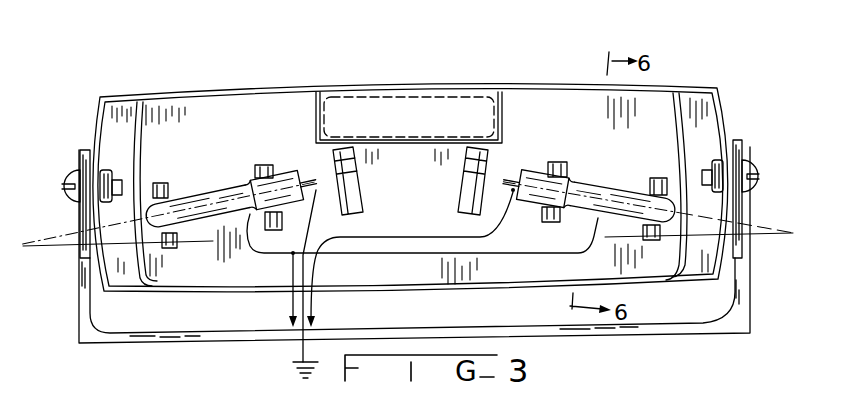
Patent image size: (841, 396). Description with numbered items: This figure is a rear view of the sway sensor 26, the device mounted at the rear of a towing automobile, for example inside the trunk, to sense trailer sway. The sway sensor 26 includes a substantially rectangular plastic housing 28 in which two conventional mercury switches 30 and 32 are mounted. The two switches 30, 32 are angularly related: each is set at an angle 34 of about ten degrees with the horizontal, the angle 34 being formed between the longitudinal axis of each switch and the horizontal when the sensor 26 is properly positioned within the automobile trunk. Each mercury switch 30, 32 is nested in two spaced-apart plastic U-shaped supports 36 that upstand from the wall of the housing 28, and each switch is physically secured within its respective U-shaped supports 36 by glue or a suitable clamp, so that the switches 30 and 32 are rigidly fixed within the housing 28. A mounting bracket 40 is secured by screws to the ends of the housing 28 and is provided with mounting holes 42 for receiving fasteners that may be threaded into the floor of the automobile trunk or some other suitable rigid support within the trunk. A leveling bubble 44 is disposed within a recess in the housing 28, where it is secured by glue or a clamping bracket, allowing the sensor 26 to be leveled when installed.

The sway sensor 26 is at (285, 78).
The housing 28 is at (182, 93).
The mercury switch 30 is at (211, 198).
The mercury switch 32 is at (618, 195).
The angle 34 is at (117, 232).
The U-shaped support 36 is at (264, 167).
The mounting bracket 40 is at (131, 343).
The mounting holes 42 is at (195, 340).
The leveling bubble 44 is at (393, 135).